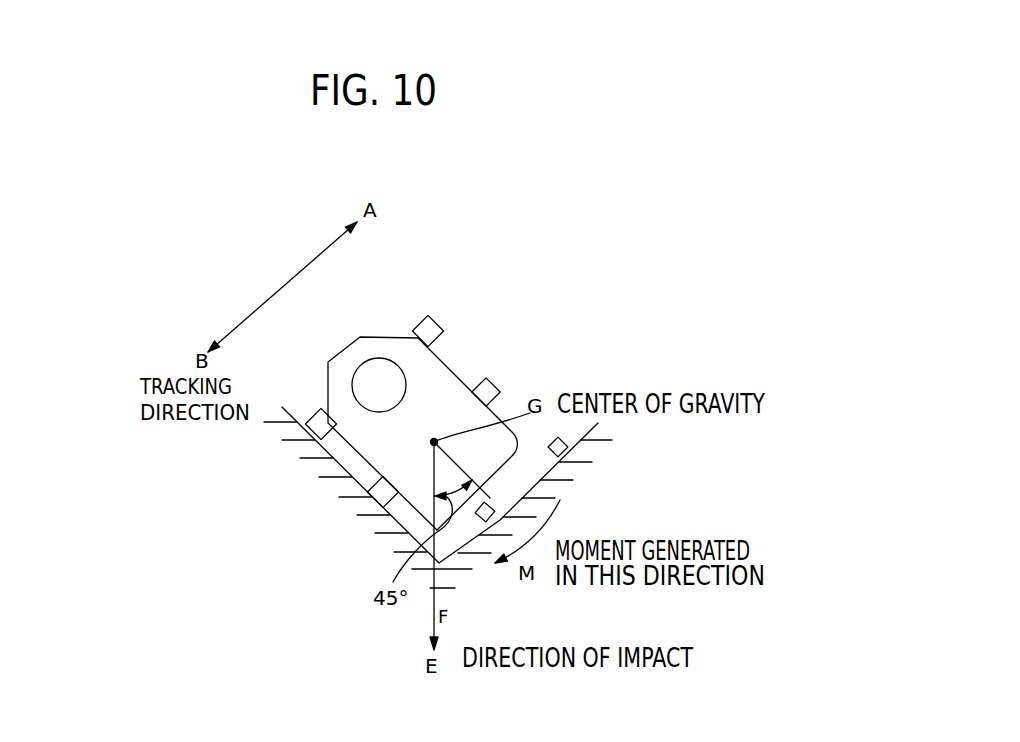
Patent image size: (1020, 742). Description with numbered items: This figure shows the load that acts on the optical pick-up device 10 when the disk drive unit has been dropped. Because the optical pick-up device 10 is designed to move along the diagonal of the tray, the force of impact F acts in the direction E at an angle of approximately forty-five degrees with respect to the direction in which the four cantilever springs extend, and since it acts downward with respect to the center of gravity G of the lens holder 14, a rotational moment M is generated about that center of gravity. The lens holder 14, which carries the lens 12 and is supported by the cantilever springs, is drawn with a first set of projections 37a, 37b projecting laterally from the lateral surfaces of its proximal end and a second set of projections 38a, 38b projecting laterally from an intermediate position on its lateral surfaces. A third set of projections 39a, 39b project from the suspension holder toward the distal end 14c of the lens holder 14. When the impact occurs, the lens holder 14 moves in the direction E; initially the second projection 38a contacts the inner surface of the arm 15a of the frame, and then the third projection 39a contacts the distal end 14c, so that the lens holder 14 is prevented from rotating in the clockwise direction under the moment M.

The optical pick-up device 10 is at (422, 376).
The objective lens 12 is at (372, 375).
The lens holder 14 is at (450, 373).
The distal end of the lens holder 14c is at (539, 481).
The arm of the frame 15a is at (343, 470).
The first projection 37a is at (310, 428).
The first projection 37b is at (436, 320).
The second projection 38a is at (373, 497).
The second projection 38b is at (499, 390).
The third projection 39a is at (478, 522).
The third projection 39b is at (568, 446).